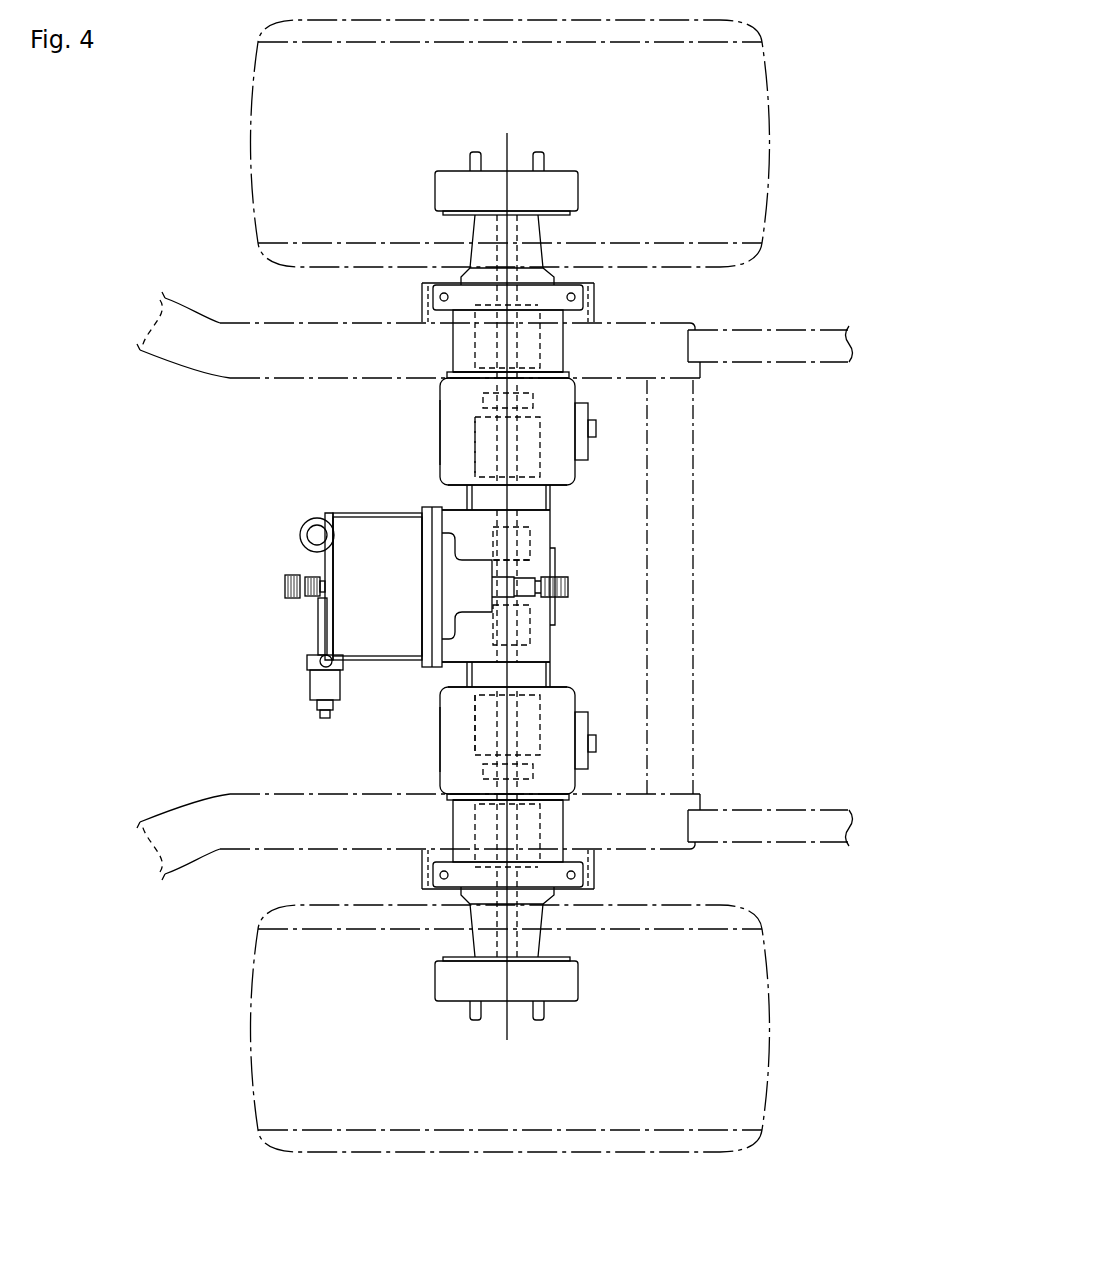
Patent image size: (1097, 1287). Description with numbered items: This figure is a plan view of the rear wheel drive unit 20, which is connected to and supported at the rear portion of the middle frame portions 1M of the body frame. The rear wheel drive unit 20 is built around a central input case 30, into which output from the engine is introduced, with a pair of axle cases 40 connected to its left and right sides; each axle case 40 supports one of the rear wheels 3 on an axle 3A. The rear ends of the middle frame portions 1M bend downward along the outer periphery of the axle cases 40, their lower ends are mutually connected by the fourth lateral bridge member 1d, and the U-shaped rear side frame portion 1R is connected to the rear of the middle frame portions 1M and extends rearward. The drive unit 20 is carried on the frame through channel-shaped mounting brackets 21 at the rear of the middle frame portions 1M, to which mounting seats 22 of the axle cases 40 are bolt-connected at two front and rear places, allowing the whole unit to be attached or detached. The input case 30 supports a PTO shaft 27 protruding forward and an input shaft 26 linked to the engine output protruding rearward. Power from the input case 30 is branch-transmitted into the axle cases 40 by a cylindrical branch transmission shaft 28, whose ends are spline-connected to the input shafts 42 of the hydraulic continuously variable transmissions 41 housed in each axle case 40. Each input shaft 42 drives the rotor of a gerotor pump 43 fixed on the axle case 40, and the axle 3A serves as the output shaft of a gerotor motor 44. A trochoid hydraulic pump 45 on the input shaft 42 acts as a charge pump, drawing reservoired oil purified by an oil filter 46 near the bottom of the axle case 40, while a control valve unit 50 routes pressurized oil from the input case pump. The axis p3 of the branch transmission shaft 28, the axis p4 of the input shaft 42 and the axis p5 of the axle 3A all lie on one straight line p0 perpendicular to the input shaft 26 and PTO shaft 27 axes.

The rear wheel 3 is at (244, 149).
The axle 3A is at (541, 243).
The straight line p0 is at (507, 585).
The axis of the axle p5 is at (497, 241).
The mounting seat 22 is at (432, 297).
The mounting bracket 21 is at (596, 292).
The motor 44 is at (556, 347).
The hydraulic pump 45 is at (462, 370).
The axle case 40 is at (440, 402).
The oil filter 46 is at (579, 399).
The hydraulic continuously variable transmission 41 is at (447, 428).
The axis of the input shaft p4 is at (476, 468).
The pump 43 is at (566, 477).
The input shaft 42 is at (551, 503).
The middle frame portion 1M is at (262, 376).
The rear side frame portion 1R is at (786, 364).
The fourth lateral bridge member 1d is at (694, 579).
The rear wheel drive unit 20 is at (297, 517).
The input case 30 is at (345, 513).
The input shaft 26 is at (570, 587).
The branch transmission shaft 28 is at (553, 636).
The axis of the branch transmission shaft p3 is at (526, 561).
The PTO shaft 27 is at (285, 587).
The control valve unit 50 is at (307, 664).